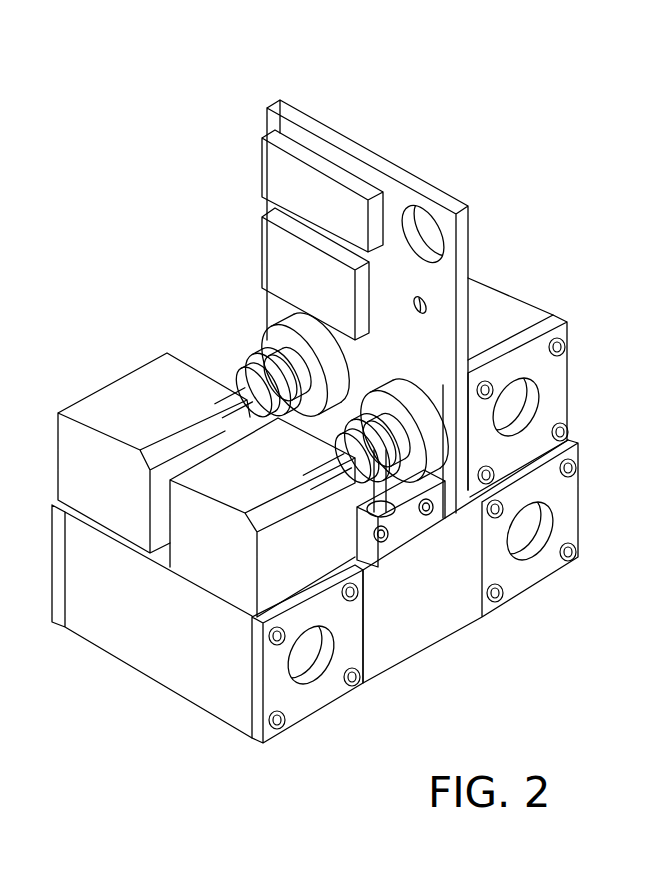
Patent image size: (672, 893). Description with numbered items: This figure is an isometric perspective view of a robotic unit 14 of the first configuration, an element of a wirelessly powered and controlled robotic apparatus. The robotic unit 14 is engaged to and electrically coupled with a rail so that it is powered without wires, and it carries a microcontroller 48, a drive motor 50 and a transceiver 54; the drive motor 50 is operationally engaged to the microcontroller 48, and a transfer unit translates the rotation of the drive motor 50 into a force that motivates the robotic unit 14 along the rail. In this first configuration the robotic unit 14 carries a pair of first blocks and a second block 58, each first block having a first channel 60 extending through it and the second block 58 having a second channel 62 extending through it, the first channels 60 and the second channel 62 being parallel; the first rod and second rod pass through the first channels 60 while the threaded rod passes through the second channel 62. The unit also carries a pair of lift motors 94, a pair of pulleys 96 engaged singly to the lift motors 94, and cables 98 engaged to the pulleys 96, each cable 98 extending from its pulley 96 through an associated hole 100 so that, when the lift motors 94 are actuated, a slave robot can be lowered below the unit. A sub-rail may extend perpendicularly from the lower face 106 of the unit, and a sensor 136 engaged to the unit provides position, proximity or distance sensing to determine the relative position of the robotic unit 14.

The robotic unit 14 is at (332, 123).
The transceiver 54 is at (282, 168).
The microcontroller 48 is at (266, 248).
The sensor 136 is at (428, 298).
The drive motor 50 is at (491, 326).
The second block 58 is at (535, 366).
The second channel 62 is at (517, 403).
The first channel 60 is at (307, 650).
The pulley 96 is at (357, 427).
The cable 98 is at (378, 498).
The lift motor 94 is at (210, 547).
The lower face 106 is at (195, 712).
The hole 100 is at (390, 508).